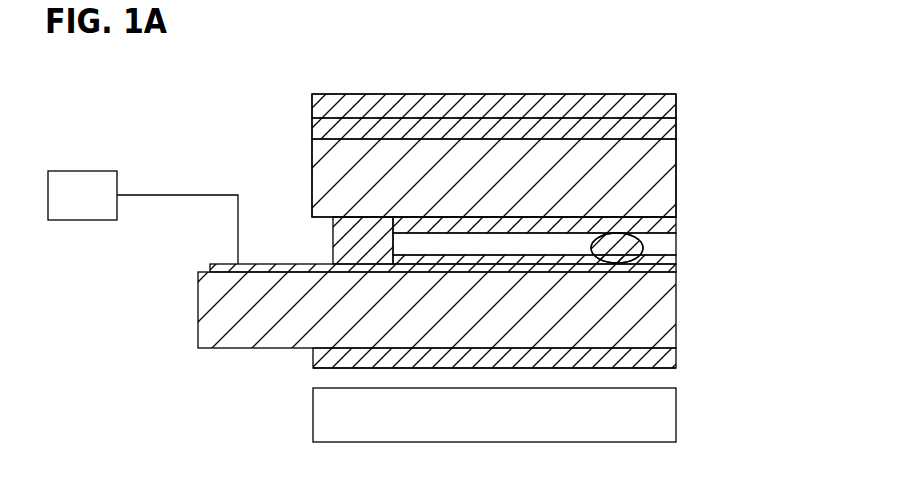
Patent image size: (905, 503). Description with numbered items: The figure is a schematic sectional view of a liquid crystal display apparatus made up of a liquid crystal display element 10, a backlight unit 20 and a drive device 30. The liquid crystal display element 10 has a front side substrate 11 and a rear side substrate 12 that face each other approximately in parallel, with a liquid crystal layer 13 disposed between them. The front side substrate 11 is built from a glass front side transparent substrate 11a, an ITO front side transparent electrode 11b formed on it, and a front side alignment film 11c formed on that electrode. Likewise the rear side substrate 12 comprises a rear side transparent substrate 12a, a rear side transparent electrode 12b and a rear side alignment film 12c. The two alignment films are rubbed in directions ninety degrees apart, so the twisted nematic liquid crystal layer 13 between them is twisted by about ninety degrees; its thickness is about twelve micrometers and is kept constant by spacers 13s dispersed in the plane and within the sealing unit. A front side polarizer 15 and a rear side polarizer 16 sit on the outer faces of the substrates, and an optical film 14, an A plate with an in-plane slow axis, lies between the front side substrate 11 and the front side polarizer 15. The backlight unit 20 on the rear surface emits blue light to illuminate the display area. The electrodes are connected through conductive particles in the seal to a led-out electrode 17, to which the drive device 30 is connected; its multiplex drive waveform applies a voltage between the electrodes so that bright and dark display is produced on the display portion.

The liquid crystal display element 10 is at (340, 86).
The front side polarizer 15 is at (680, 103).
The optical film 14 is at (680, 129).
The front side substrate 11 is at (565, 201).
The front side transparent substrate 11a is at (680, 185).
The front side transparent electrode 11b is at (680, 222).
The front side alignment film 11c is at (663, 247).
The liquid crystal layer 13 is at (677, 249).
The spacer 13s is at (620, 240).
The rear side substrate 12 is at (508, 313).
The rear side alignment film 12c is at (680, 265).
The rear side transparent electrode 12b is at (548, 268).
The rear side transparent substrate 12a is at (678, 337).
The rear side polarizer 16 is at (678, 361).
The led-out electrode 17 is at (228, 262).
The drive device 30 is at (80, 170).
The backlight unit 20 is at (313, 418).